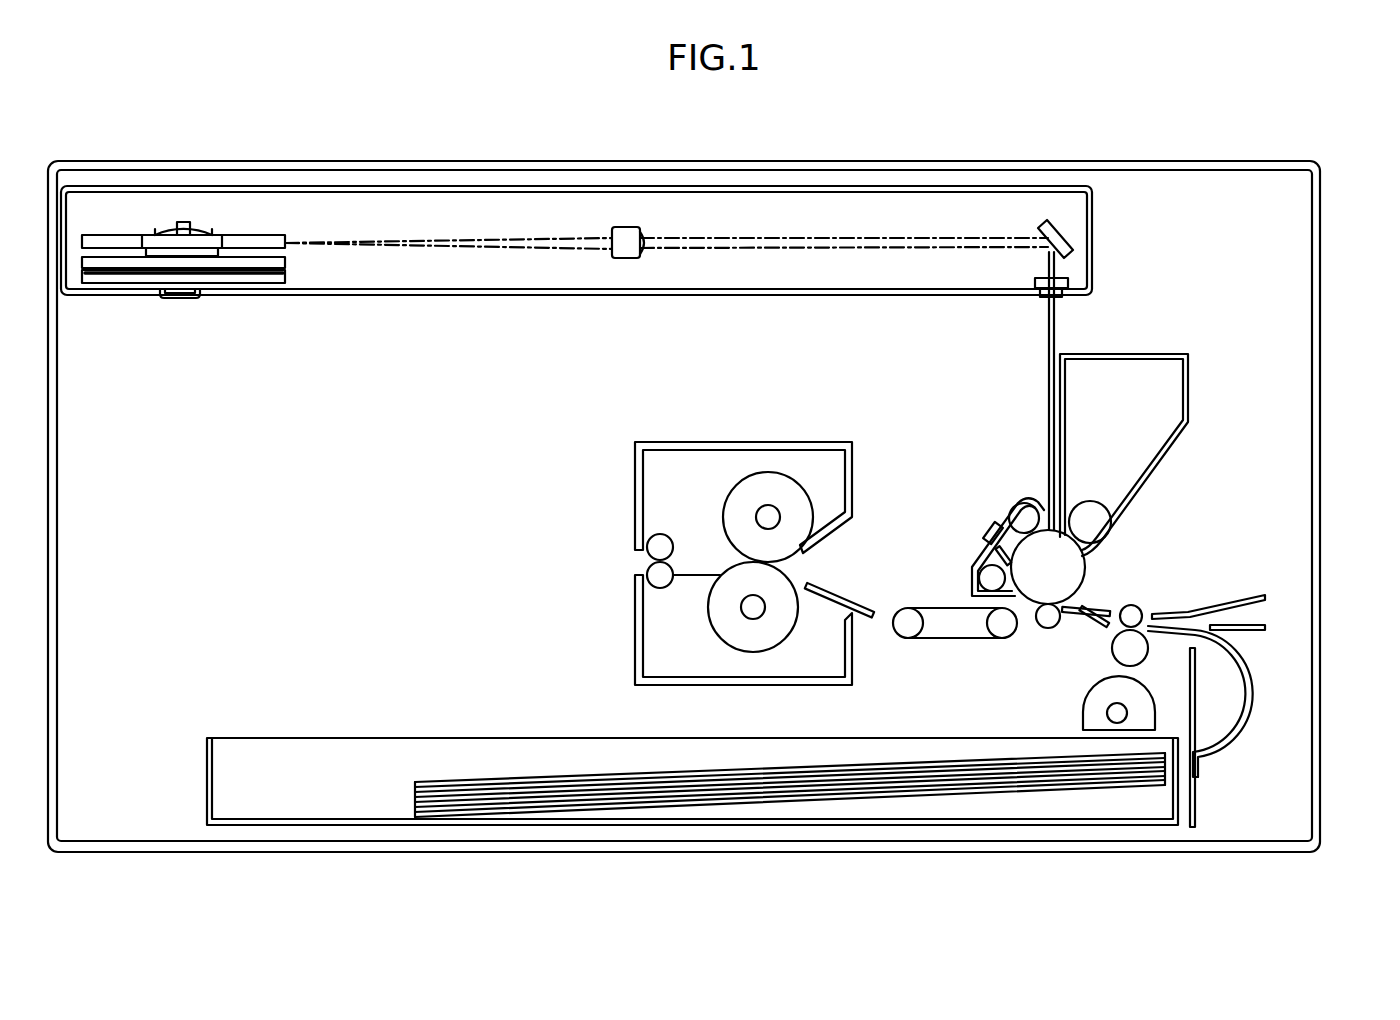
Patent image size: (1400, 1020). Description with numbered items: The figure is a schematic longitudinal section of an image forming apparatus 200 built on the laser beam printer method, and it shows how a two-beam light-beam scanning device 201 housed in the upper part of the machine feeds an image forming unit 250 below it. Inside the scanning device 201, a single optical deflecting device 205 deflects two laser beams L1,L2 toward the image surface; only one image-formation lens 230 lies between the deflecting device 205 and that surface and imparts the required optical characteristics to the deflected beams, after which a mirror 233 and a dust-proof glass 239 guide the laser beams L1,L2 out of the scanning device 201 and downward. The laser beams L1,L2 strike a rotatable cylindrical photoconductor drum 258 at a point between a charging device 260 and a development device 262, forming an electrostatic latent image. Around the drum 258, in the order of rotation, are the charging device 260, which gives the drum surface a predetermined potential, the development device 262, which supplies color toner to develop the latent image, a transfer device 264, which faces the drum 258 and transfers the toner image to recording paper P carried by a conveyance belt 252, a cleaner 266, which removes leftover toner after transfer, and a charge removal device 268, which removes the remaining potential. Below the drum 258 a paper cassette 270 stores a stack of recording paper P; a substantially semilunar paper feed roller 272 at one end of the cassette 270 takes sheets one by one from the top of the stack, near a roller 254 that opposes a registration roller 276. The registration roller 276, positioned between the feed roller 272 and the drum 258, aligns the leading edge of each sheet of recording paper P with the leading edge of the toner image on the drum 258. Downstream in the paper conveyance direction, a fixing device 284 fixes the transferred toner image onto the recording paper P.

The image forming apparatus 200 is at (1320, 690).
The light-beam scanning device 201 is at (440, 290).
The optical deflecting device 205 is at (159, 203).
The image-formation lens 230 is at (628, 227).
The laser beams L1,L2 is at (945, 238).
The mirror 233 is at (1062, 233).
The dust-proof glass 239 is at (1060, 299).
The image forming unit 250 is at (1212, 497).
The development device 262 is at (1098, 514).
The photoconductor drum 258 is at (1072, 575).
The charging device 260 is at (1022, 505).
The charge removal device 268 is at (985, 530).
The cleaner 266 is at (985, 575).
The transfer device 264 is at (1048, 628).
The conveyance belt 252 is at (940, 630).
The registration roller 276 is at (1140, 612).
The roller 254 is at (1138, 647).
The paper feed roller 272 is at (1080, 711).
The fixing device 284 is at (733, 458).
The paper cassette 270 is at (375, 757).
The recording paper P is at (500, 782).